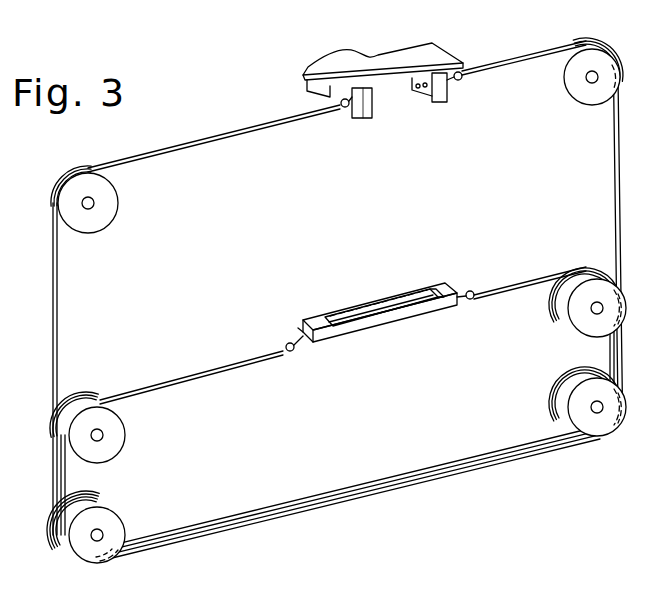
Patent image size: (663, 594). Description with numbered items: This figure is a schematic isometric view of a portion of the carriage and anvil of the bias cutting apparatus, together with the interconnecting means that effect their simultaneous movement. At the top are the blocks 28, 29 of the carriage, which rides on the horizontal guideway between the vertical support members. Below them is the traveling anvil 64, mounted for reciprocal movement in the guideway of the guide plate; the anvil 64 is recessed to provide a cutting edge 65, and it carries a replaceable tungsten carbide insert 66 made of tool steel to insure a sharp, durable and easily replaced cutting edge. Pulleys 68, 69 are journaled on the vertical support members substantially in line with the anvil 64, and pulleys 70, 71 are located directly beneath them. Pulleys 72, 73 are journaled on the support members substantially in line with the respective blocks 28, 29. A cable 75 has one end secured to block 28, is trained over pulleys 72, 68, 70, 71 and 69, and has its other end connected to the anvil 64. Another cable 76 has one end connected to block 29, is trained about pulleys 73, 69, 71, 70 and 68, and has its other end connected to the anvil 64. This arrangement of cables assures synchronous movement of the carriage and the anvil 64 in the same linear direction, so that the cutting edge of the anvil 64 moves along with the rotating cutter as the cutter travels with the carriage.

The block 28 is at (362, 100).
The block 29 is at (447, 93).
The anvil 64 is at (348, 311).
The cutting edge 65 is at (367, 307).
The replaceable tungsten carbide insert 66 is at (381, 312).
The pulley 68 is at (113, 433).
The pulley 69 is at (587, 312).
The pulley 70 is at (107, 520).
The pulley 71 is at (580, 405).
The pulley 72 is at (107, 213).
The pulley 73 is at (598, 93).
The cable 75 is at (205, 143).
The cable 76 is at (531, 53).